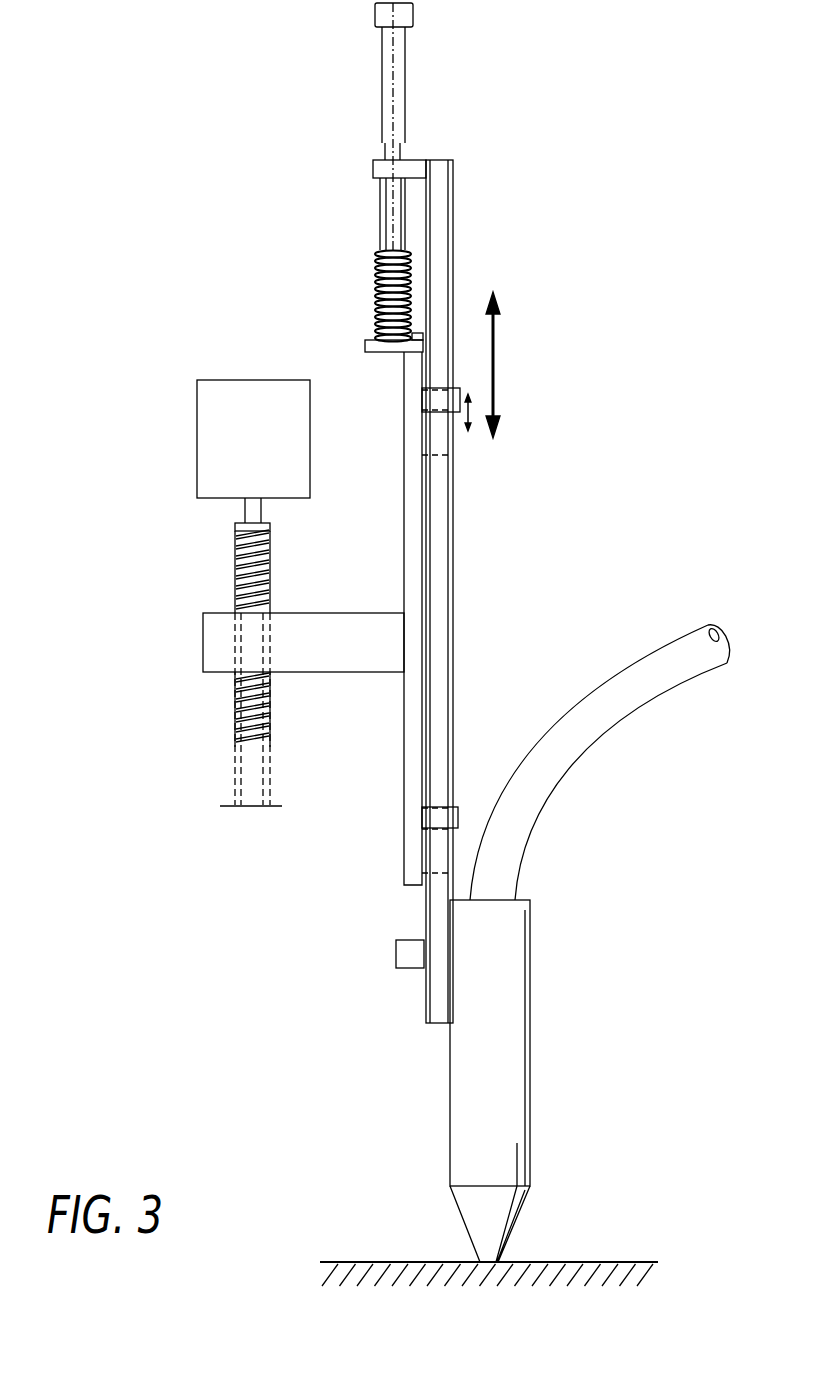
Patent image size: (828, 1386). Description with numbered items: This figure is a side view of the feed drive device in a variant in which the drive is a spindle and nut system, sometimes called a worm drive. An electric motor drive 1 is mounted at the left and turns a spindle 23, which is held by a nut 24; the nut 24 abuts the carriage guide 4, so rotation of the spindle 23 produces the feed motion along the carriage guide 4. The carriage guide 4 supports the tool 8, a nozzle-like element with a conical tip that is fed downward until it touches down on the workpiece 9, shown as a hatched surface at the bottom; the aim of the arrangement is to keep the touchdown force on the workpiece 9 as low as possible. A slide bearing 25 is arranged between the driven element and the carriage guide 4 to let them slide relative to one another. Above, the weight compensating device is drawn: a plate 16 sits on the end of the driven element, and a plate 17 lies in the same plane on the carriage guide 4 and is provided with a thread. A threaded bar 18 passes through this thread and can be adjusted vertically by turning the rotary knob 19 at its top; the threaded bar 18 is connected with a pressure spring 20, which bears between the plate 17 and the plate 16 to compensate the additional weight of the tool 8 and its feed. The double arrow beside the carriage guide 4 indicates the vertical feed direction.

The electric motor drive 1 is at (197, 418).
The carriage guide 4 is at (462, 570).
The tool 8 is at (518, 1073).
The workpiece 9 is at (623, 1262).
The plate 16 is at (372, 355).
The plate 17 is at (372, 168).
The threaded bar 18 is at (392, 116).
The rotary knob 19 is at (413, 12).
The pressure spring 20 is at (375, 300).
The spindle 23 is at (233, 572).
The nut 24 is at (212, 665).
The slide bearing 25 is at (425, 597).